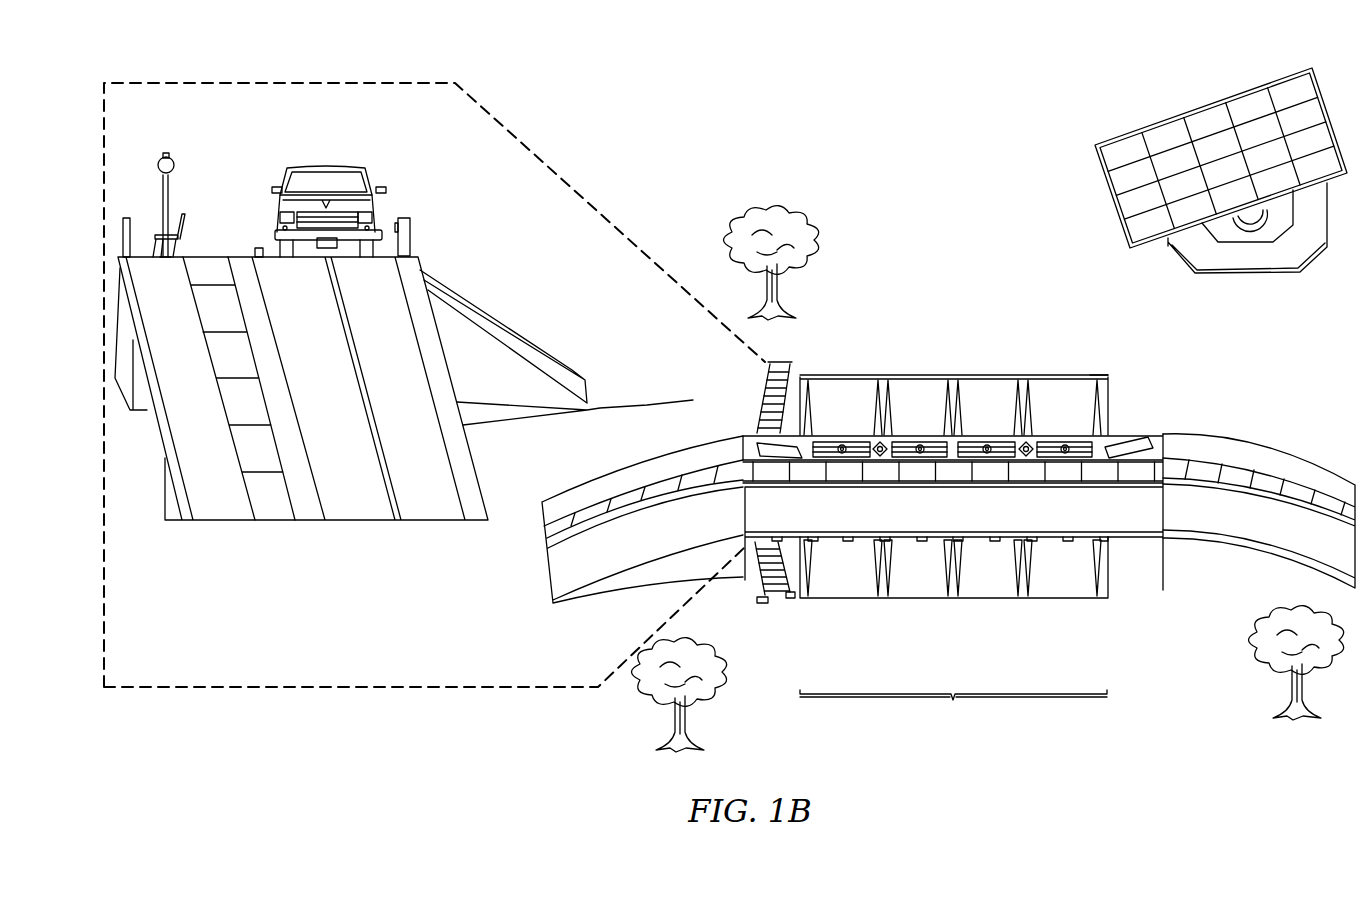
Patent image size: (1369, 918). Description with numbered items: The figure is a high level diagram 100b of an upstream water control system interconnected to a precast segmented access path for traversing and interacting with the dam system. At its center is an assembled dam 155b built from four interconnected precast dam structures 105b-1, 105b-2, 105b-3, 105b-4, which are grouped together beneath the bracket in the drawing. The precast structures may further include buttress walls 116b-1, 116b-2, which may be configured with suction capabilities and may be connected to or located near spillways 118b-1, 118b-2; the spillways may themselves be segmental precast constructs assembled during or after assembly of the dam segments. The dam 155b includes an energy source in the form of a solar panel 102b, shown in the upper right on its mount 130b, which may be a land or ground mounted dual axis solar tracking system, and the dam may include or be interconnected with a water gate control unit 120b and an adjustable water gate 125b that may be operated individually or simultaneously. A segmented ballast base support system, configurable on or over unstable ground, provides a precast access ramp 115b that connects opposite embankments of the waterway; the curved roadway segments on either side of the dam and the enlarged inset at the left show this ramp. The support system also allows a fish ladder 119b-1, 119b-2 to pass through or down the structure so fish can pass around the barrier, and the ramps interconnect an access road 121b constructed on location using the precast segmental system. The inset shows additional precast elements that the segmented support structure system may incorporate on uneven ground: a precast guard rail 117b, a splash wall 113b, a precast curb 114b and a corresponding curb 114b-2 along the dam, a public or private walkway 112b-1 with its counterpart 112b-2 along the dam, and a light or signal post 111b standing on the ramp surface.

The high level diagram 100b is at (962, 92).
The solar panel 102b is at (1203, 105).
The solar panel mount 130b is at (1248, 232).
The light pole / signal 111b is at (167, 152).
The splash wall 113b is at (128, 218).
The precast curb 114b is at (258, 249).
The precast guard rail 117b is at (407, 218).
The buttress wall 116b-1 is at (520, 332).
The walkway 112b-1 is at (272, 500).
The precast access ramp 115b is at (352, 498).
The fish ladder 119b-1 is at (762, 392).
The fish ladder 119b-2 is at (776, 605).
The spillway 118b-1 is at (905, 392).
The spillway 118b-2 is at (1115, 602).
The walkway 112b-2 is at (1000, 468).
The water gate control unit 120b is at (1050, 440).
The buttress wall 116b-2 is at (1093, 376).
The adjustable water gate 125b is at (1078, 438).
The precast curb 114b-2 is at (882, 487).
The access road 121b is at (793, 520).
The precast dam structure 105b-1 is at (849, 575).
The precast dam structure 105b-2 is at (925, 583).
The precast dam structure 105b-3 is at (985, 575).
The precast dam structure 105b-4 is at (1065, 580).
The assembled dam 155b is at (953, 712).